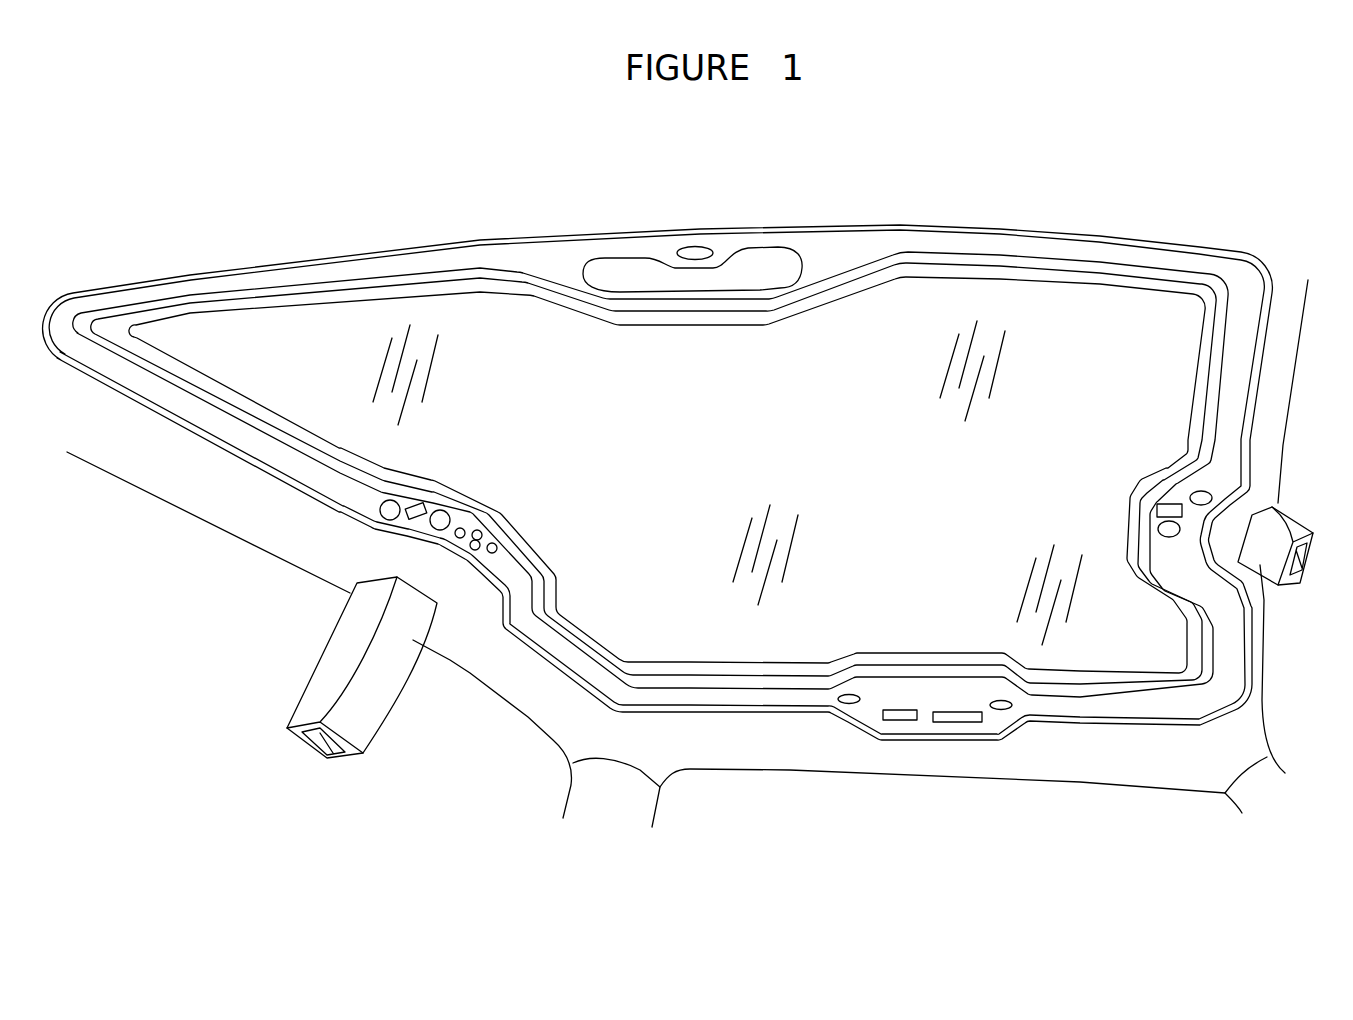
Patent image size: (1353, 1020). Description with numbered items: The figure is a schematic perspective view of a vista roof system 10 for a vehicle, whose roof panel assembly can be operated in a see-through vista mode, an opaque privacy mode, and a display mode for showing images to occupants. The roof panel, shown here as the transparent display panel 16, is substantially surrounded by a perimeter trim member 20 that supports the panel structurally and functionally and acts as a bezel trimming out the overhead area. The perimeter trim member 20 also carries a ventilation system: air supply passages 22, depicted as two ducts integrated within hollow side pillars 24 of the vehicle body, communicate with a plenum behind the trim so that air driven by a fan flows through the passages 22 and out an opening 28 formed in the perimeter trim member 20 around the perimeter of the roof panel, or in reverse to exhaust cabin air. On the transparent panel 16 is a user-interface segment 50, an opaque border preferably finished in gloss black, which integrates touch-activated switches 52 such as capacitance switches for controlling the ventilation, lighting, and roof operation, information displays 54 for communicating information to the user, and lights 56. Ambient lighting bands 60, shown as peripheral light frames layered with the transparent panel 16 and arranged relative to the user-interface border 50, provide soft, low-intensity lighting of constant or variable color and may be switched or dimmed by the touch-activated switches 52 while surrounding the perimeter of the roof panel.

The vista roof system 10 is at (1145, 127).
The transparent display panel 16 is at (810, 454).
The perimeter trim member 20 is at (195, 482).
The air supply passages 22 is at (318, 746).
The side pillars 24 is at (332, 658).
The opening 28 is at (1105, 236).
The user-interface segment 50 is at (1240, 277).
The touch-activated switches 52 is at (690, 249).
The information displays 54 is at (930, 698).
The lights 56 is at (782, 260).
The ambient lighting bands 60 is at (240, 300).